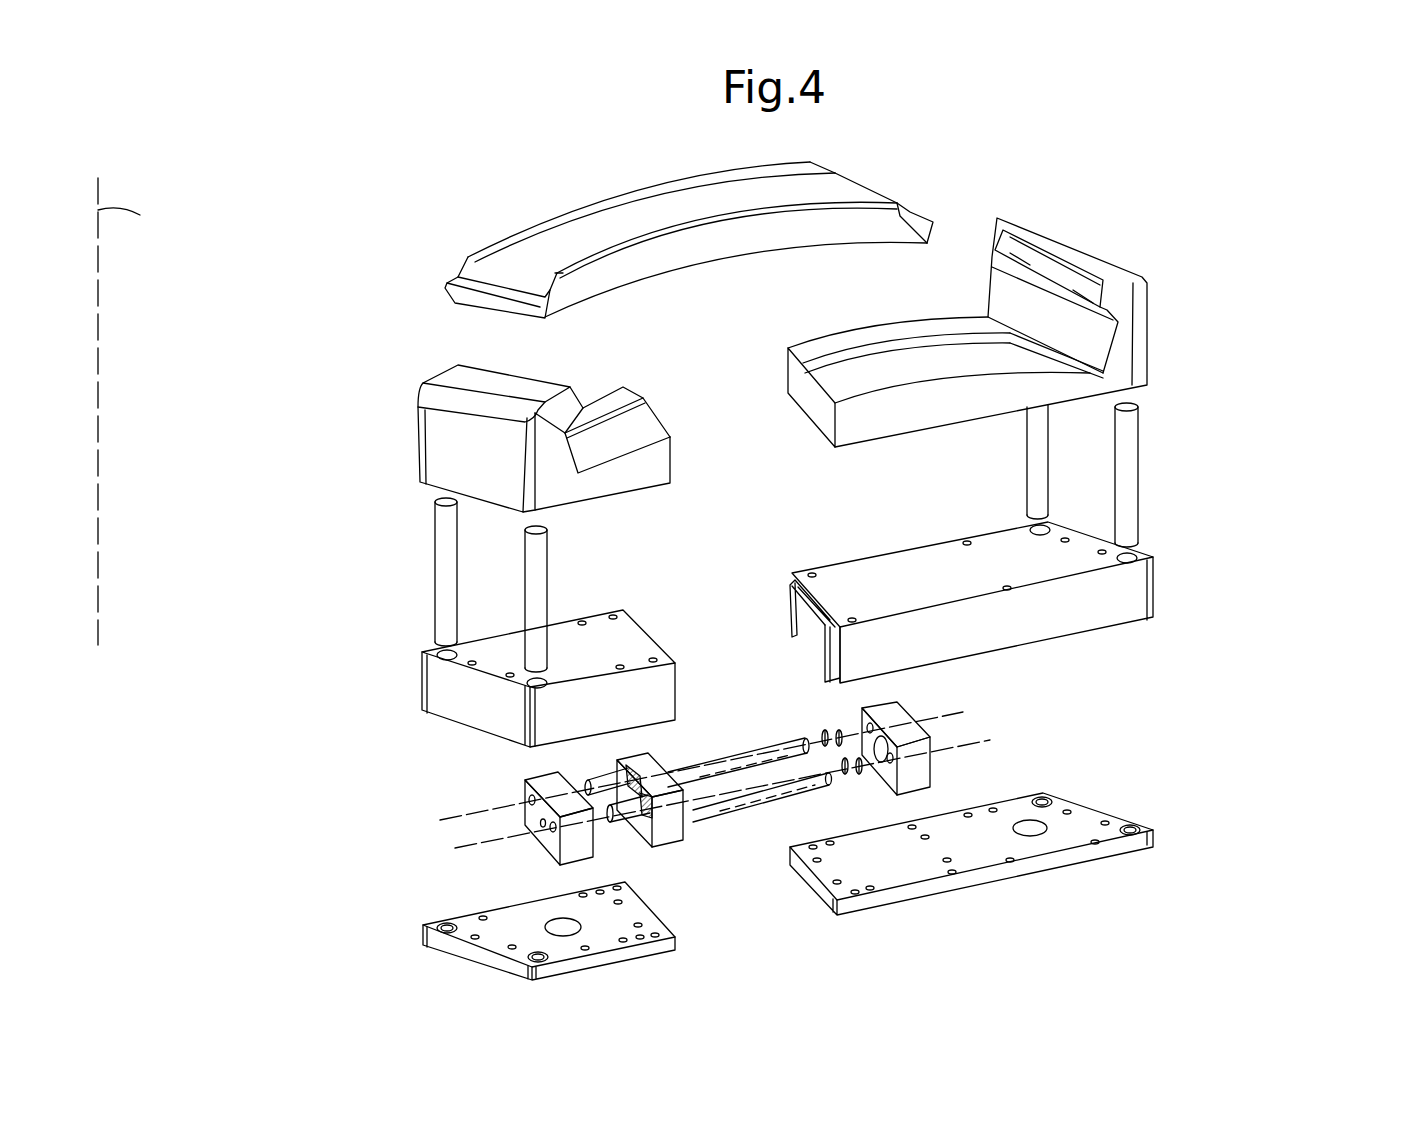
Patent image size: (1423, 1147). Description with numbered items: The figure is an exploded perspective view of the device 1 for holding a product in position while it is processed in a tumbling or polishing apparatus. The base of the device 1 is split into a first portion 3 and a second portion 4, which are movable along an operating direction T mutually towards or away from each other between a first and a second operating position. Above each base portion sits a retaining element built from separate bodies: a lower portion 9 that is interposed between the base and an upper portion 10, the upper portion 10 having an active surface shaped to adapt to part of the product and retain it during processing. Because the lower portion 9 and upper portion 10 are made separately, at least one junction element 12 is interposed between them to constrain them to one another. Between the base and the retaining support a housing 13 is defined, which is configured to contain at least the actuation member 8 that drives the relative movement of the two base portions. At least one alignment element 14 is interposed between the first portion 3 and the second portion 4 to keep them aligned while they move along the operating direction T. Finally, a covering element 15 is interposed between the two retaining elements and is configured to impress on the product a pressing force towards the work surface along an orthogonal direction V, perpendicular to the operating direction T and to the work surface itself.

The device 1 is at (1134, 196).
The first portion 3 is at (513, 928).
The second portion 4 is at (1062, 842).
The actuation member 8 is at (762, 774).
The lower portion 9 is at (458, 698).
The upper portion 10 is at (457, 453).
The junction element 12 is at (537, 638).
The housing 13 is at (800, 661).
The alignment element 14 is at (782, 741).
The covering element 15 is at (522, 272).
The operating direction T is at (715, 783).
The orthogonal direction V is at (172, 214).